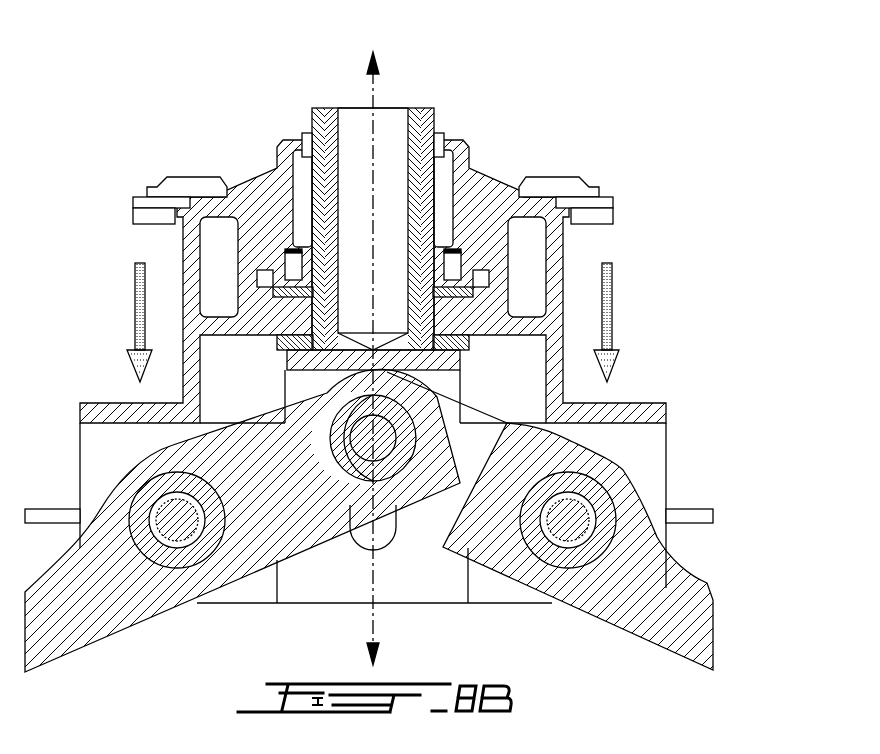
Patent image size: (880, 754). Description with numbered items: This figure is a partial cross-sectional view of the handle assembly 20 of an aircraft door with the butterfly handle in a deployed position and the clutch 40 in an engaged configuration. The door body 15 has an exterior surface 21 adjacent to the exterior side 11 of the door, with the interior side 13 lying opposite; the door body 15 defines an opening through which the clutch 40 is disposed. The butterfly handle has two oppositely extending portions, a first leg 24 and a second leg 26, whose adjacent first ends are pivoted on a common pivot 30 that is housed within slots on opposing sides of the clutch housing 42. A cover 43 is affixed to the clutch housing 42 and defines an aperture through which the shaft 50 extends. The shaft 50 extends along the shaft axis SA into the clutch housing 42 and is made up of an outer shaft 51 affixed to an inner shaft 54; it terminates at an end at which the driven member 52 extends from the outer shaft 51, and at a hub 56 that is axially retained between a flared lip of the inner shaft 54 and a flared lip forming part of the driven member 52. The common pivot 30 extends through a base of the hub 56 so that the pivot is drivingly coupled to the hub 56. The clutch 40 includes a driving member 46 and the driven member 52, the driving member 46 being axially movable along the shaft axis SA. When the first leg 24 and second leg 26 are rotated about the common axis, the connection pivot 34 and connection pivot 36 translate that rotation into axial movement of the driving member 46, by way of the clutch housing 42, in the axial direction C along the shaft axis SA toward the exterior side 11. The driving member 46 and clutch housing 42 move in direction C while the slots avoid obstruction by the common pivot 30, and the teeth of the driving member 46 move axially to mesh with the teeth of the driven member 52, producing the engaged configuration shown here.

The exterior side 11 is at (80, 713).
The interior side 13 is at (62, 85).
The door body 15 is at (48, 514).
The handle assembly 20 is at (695, 100).
The exterior surface 21 is at (28, 527).
The first leg 24 is at (97, 648).
The second leg 26 is at (708, 584).
The common pivot 30 is at (363, 498).
The connection pivot 34 is at (187, 566).
The connection pivot 36 is at (565, 563).
The clutch 40 is at (700, 246).
The clutch housing 42 is at (641, 430).
The cover 43 is at (148, 197).
The driving member 46 is at (473, 271).
The shaft 50 is at (436, 117).
The outer shaft 51 is at (312, 120).
The driven member 52 is at (293, 258).
The inner shaft 54 is at (304, 134).
The hub 56 is at (218, 325).
The axial direction C is at (371, 322).
The shaft axis SA is at (390, 358).